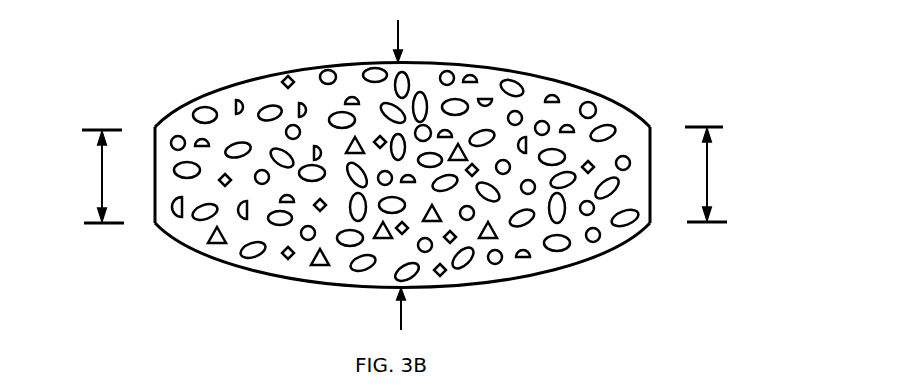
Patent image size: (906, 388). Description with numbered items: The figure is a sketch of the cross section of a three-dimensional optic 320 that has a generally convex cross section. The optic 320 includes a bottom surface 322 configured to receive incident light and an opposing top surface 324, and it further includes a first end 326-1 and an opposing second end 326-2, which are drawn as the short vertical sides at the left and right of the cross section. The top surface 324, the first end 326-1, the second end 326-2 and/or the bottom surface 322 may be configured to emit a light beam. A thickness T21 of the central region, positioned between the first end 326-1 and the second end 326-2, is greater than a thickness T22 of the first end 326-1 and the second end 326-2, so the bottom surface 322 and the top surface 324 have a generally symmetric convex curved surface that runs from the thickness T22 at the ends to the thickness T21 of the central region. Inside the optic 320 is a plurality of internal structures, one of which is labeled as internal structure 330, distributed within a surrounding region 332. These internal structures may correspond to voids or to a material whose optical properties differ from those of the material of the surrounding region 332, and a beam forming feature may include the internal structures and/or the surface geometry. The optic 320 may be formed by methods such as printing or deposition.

The 3-D optic 320 is at (406, 167).
The bottom surface 322 is at (331, 283).
The top surface 324 is at (306, 69).
The first end 326-1 is at (659, 137).
The second end 326-2 is at (155, 138).
The internal structure 330 is at (560, 243).
The surrounding region 332 is at (457, 265).
The thickness of central region T21 is at (419, 173).
The thickness of the ends T22 is at (407, 175).